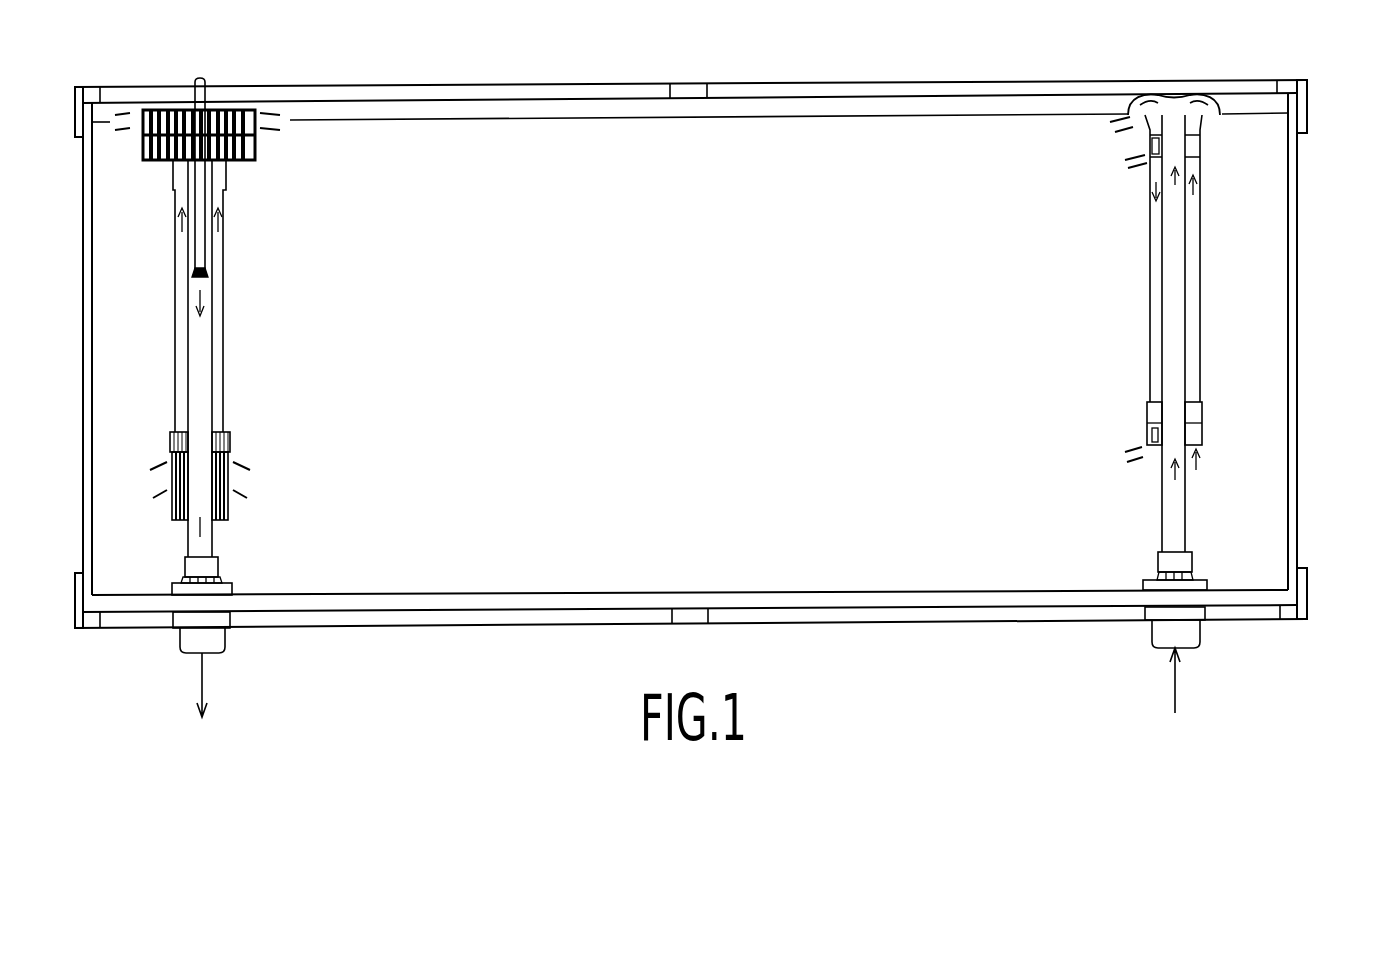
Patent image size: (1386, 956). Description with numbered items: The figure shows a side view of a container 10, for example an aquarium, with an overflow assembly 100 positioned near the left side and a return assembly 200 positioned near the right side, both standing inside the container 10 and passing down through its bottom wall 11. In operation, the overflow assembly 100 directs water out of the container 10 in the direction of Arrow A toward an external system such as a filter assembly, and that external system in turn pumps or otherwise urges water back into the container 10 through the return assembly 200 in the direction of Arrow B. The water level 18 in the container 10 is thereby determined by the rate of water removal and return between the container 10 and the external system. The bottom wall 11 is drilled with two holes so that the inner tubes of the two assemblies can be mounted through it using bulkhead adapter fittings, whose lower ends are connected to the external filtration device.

The container 10 is at (1297, 263).
The bottom wall 11 is at (648, 595).
The water level 18 is at (720, 120).
The overflow assembly 100 is at (253, 332).
The return assembly 200 is at (1123, 327).